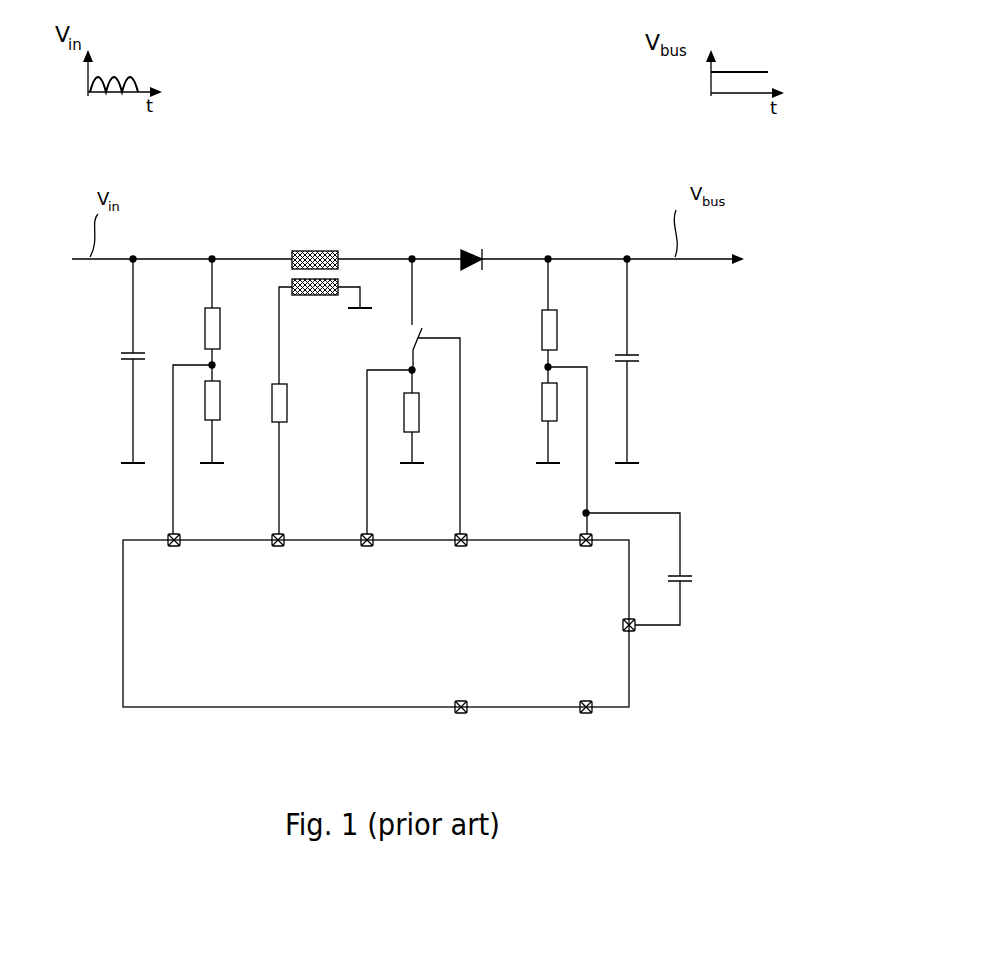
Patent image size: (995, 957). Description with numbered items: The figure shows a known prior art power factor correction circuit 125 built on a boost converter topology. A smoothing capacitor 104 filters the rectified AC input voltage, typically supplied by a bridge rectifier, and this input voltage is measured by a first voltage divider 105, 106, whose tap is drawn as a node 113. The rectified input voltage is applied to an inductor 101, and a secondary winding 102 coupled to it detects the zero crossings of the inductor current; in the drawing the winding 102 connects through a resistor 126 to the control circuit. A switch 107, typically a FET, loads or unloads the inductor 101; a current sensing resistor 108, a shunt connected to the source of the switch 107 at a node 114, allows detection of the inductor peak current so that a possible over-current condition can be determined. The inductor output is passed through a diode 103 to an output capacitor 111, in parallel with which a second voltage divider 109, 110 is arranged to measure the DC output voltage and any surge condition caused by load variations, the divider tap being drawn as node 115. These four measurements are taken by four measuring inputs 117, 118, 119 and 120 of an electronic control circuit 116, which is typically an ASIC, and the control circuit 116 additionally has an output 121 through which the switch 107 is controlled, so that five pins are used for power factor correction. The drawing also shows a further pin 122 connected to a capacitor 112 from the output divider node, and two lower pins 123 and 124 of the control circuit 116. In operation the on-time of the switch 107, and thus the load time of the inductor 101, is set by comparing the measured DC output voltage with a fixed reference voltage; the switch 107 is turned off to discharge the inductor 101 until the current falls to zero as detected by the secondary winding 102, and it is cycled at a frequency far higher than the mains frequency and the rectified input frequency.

The inductor 101 is at (318, 250).
The secondary winding 102 is at (316, 296).
The diode 103 is at (468, 250).
The smoothing capacitor 104 is at (121, 357).
The voltage divider 105 is at (205, 320).
The voltage divider 106 is at (220, 420).
The switch 107 is at (422, 330).
The current sensing resistor 108 is at (419, 423).
The second voltage divider 109 is at (557, 331).
The second voltage divider 110 is at (542, 404).
The output capacitor 111 is at (640, 358).
The compensation capacitor 112 is at (692, 580).
The voltage divider node 113 is at (214, 365).
The switch node 114 is at (410, 370).
The output voltage divider node 115 is at (546, 367).
The electronic control circuit 116 is at (123, 628).
The measuring input 117 is at (174, 547).
The measuring input 118 is at (278, 547).
The measuring input 119 is at (367, 547).
The measuring input 120 is at (586, 547).
The output 121 is at (461, 547).
The compensation pin 122 is at (622, 627).
The ground pin 123 is at (461, 714).
The supply pin 124 is at (586, 714).
The power factor correction circuit 125 is at (436, 185).
The resistor 126 is at (288, 400).